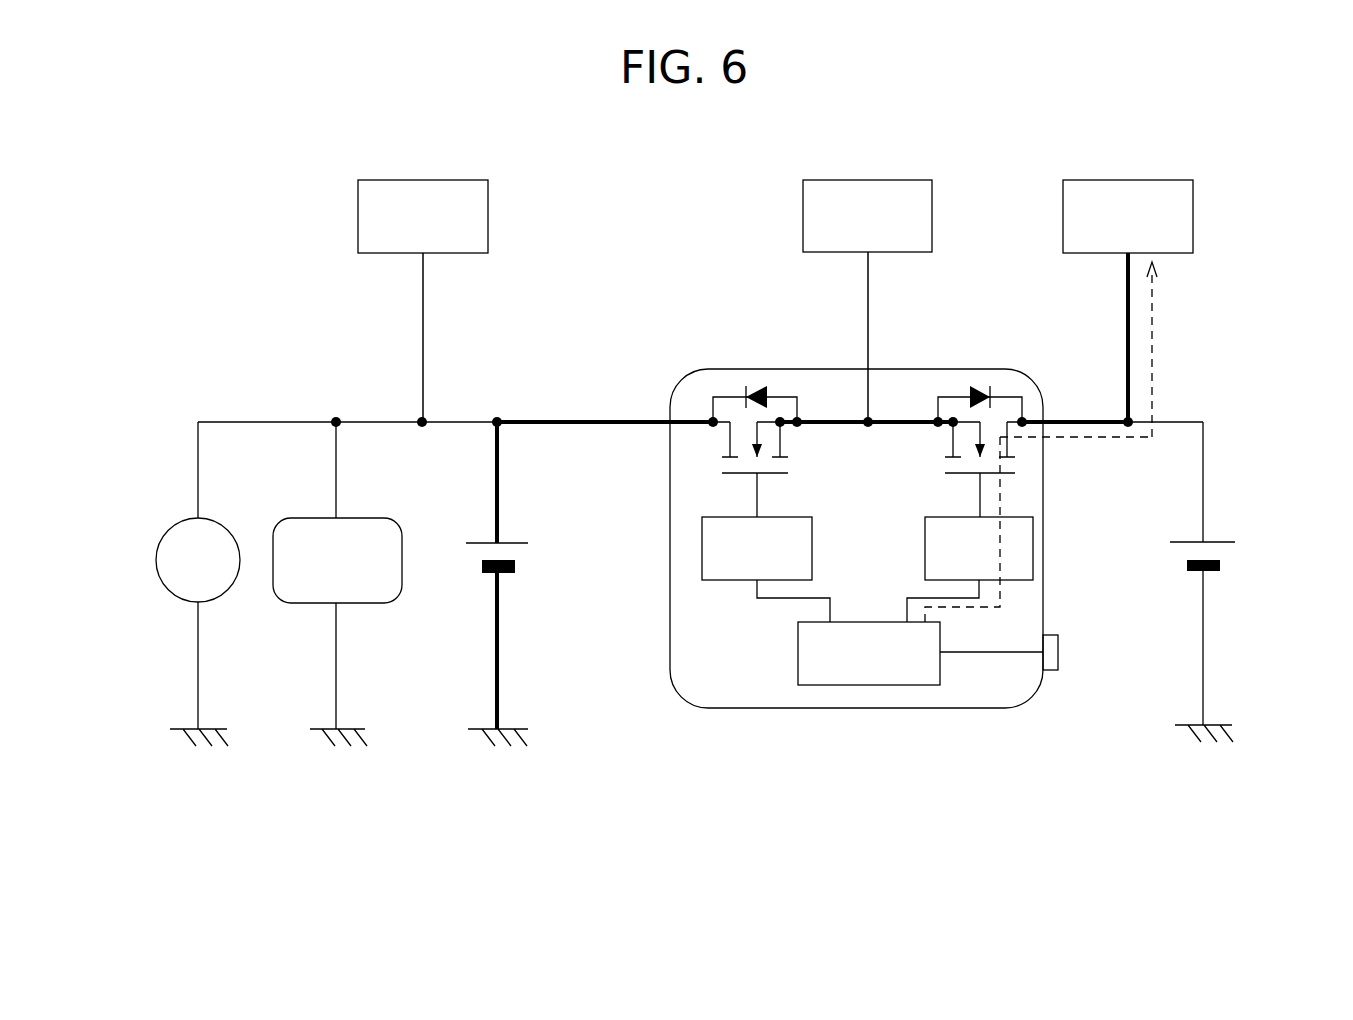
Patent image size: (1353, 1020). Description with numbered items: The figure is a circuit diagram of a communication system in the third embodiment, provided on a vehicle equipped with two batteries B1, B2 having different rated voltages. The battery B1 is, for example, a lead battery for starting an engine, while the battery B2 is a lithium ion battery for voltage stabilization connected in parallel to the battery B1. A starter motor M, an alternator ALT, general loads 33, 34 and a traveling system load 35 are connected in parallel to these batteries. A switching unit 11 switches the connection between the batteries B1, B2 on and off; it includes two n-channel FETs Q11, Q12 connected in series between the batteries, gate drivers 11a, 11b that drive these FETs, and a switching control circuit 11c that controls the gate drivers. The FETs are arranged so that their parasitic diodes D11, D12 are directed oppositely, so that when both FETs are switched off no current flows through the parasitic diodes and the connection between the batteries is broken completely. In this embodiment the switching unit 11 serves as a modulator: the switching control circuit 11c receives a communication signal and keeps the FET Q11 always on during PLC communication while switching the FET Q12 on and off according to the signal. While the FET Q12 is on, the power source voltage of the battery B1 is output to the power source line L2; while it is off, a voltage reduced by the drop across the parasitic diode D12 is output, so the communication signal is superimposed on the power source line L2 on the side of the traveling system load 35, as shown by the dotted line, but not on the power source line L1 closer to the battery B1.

The general load 33 is at (437, 180).
The general load 34 is at (882, 180).
The traveling system load 35 is at (1140, 180).
The switching unit 11 is at (878, 708).
The gate driver 11a is at (719, 580).
The gate driver 11b is at (1034, 545).
The switching control circuit 11c is at (870, 622).
The n-channel FET Q11 is at (727, 397).
The n-channel FET Q12 is at (1040, 338).
The parasitic diode D11 is at (762, 392).
The parasitic diode D12 is at (973, 392).
The power source line L1 is at (589, 420).
The power source line L2 is at (1126, 292).
The battery B1 is at (520, 543).
The battery B2 is at (1224, 542).
The starter motor M is at (213, 518).
The alternator ALT is at (363, 518).
The PLC communication PLC is at (1060, 442).